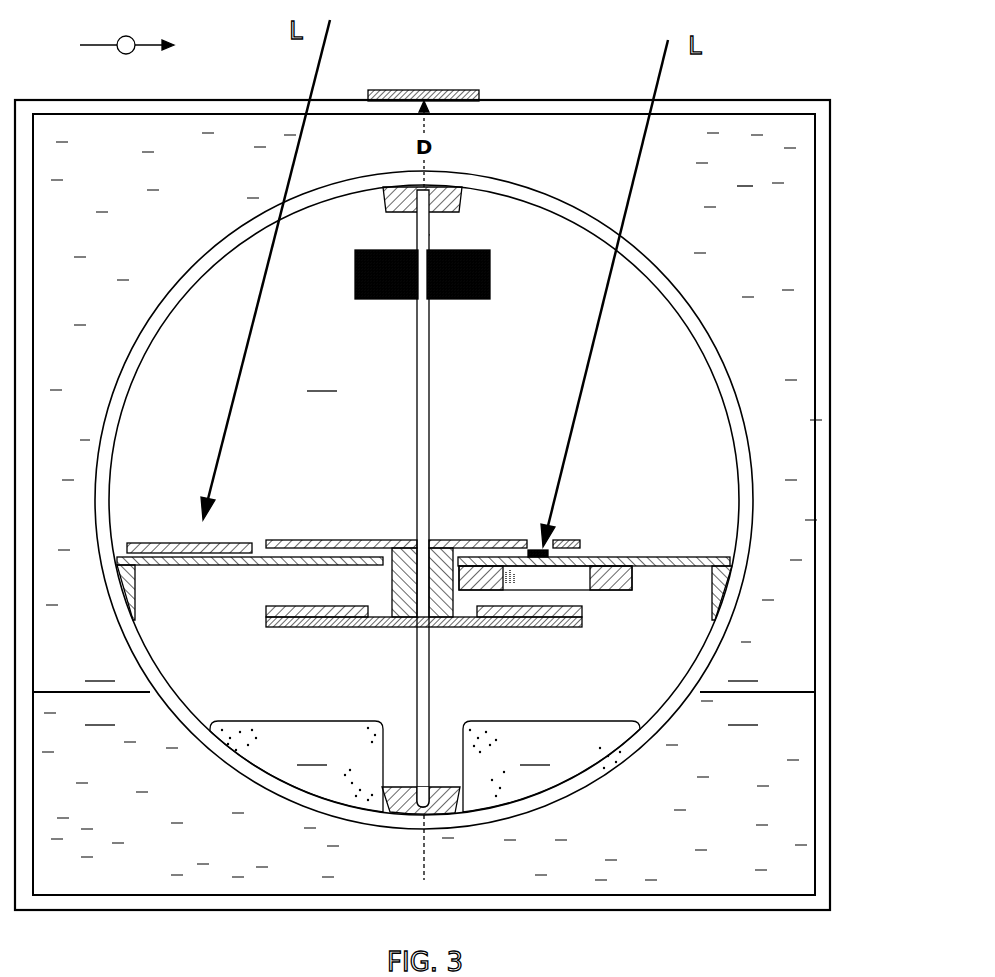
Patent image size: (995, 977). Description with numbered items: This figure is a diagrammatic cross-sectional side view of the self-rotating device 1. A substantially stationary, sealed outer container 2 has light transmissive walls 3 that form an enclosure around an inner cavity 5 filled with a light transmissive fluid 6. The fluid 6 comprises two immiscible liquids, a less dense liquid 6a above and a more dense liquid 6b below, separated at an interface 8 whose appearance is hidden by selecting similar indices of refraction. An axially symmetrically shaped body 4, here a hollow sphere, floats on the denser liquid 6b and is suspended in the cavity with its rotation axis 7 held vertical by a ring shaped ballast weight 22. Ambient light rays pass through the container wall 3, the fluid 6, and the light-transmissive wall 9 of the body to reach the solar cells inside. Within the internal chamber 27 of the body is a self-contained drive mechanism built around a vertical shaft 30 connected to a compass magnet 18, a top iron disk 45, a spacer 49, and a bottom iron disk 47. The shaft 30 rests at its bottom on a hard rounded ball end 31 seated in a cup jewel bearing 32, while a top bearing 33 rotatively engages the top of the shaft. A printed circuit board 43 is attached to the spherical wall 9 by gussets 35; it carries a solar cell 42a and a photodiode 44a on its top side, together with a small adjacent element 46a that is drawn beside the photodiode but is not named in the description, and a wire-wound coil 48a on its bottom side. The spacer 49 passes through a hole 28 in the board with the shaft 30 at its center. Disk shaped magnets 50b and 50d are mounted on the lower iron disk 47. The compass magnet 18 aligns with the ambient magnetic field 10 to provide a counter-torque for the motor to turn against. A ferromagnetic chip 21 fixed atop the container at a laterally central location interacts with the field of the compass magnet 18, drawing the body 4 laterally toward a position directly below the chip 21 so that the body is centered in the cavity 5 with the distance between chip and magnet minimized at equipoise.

The self-rotating device 1 is at (856, 66).
The outer container 2 is at (832, 155).
The light transmissive walls 3 is at (760, 100).
The axially symmetrically shaped body 4 is at (670, 234).
The inner cavity 5 is at (134, 875).
The light transmissive fluid 6 is at (432, 506).
The less dense liquid 6a is at (395, 673).
The more dense liquid 6b is at (450, 709).
The axis 7 is at (424, 858).
The interface 8 is at (55, 690).
The light-transmissive wall 9 is at (203, 255).
The ambient magnetic field 10 is at (134, 37).
The compass magnet 18 is at (400, 300).
The chip 21 is at (472, 90).
The ballast weight 22 is at (556, 100).
The internal chamber 27 is at (322, 379).
The hole 28 is at (385, 540).
The vertical shaft 30 is at (417, 438).
The ball end 31 is at (415, 815).
The cup jewel bearing 32 is at (460, 810).
The top bearing 33 is at (458, 186).
The gussets 35 is at (135, 590).
The solar cell 42a is at (160, 543).
The printed circuit board 43 is at (672, 557).
The photodiode 44a is at (537, 550).
The top iron disk 45 is at (470, 540).
The second sensor element 46a is at (565, 540).
The bottom iron disk 47 is at (470, 628).
The coil 48a is at (640, 578).
The spacer 49 is at (392, 597).
The disk shaped magnet 50b is at (582, 614).
The disk shaped magnet 50d is at (266, 612).